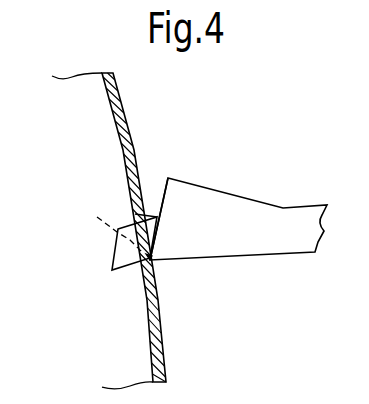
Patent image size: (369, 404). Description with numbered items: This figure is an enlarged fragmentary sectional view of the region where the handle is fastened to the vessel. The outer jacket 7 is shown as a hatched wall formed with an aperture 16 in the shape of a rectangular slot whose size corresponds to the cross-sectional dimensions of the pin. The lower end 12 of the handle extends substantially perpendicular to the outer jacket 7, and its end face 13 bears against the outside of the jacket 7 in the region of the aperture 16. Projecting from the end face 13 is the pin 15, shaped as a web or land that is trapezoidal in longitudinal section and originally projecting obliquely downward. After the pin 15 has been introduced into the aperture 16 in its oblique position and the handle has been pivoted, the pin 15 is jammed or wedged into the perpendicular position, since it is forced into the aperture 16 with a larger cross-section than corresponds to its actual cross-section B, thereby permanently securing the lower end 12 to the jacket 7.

The outer jacket 7 is at (123, 112).
The lower end 12 is at (265, 217).
The end face 13 is at (167, 186).
The pin 15 is at (125, 251).
The aperture 16 is at (139, 213).
The actual cross-section B is at (115, 223).